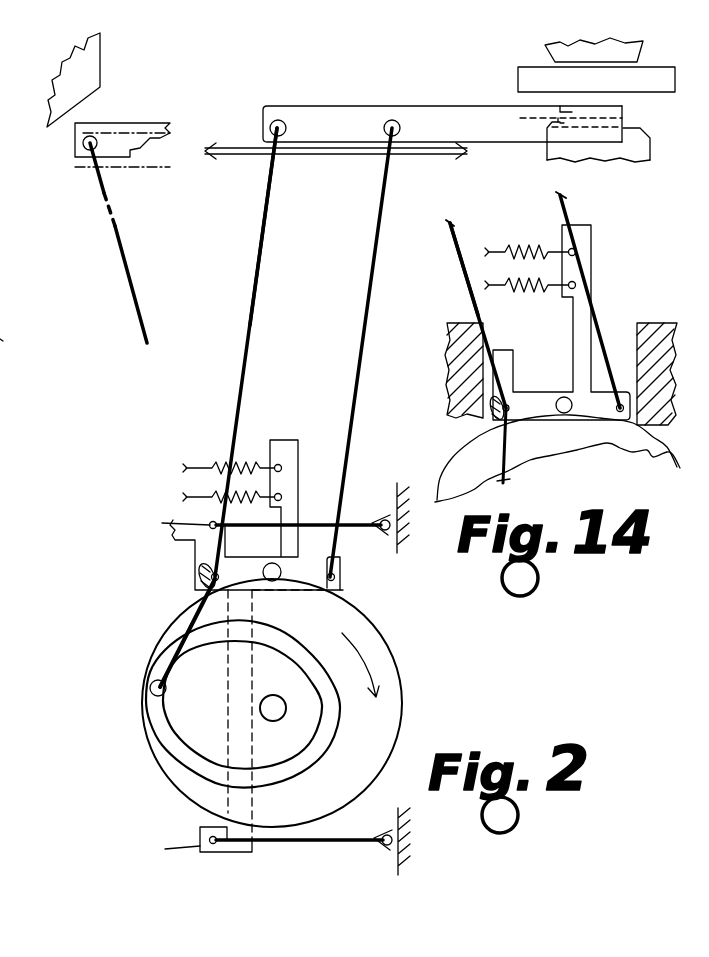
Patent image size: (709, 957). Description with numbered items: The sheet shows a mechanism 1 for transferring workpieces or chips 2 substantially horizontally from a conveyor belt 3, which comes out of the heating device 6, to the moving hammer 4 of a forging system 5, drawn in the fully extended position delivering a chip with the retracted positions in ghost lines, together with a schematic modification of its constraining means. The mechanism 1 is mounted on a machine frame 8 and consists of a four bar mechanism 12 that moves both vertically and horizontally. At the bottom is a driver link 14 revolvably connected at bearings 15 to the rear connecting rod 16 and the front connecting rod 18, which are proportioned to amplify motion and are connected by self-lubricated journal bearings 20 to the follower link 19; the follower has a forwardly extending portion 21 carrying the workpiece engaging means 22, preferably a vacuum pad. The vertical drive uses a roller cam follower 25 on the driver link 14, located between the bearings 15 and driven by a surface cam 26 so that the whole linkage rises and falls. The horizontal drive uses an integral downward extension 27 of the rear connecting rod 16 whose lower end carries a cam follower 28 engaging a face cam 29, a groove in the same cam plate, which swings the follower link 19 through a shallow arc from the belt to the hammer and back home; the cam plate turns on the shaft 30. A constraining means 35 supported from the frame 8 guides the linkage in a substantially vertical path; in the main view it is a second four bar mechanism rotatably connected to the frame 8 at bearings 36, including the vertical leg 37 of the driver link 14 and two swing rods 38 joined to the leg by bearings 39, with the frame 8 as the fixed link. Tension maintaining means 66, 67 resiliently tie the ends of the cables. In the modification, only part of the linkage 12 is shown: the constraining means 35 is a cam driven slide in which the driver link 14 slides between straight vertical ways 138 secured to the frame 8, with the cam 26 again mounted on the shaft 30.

In FIG. 2, the mechanism 1 is at (110, 404).
In FIG. 2, the chip 2 is at (559, 118).
In FIG. 2, the conveyor belt 3 is at (240, 160).
In FIG. 2, the hammer 4 is at (644, 162).
In FIG. 2, the forging system 5 is at (489, 86).
In FIG. 2, the heating device 6 is at (95, 72).
In FIG. 2, the machine frame 8 is at (397, 552).
In FIG. 2, the four bar mechanism 12 is at (254, 226).
In FIG. 14, the four bar mechanism 12 is at (460, 303).
In FIG. 2, the driver link 14 is at (195, 552).
In FIG. 14, the driver link 14 is at (546, 411).
In FIG. 2, the bearings 15 is at (221, 576).
In FIG. 14, the bearings 15 is at (512, 400).
In FIG. 2, the rear connecting rod 16 is at (259, 268).
In FIG. 14, the rear connecting rod 16 is at (462, 268).
In FIG. 2, the front connecting rod 18 is at (386, 180).
In FIG. 14, the front connecting rod 18 is at (594, 309).
In FIG. 2, the follower link 19 is at (320, 106).
In FIG. 2, the bearings 20 is at (271, 124).
In FIG. 2, the forwardly extending portion 21 is at (636, 130).
In FIG. 2, the workpiece engaging means 22 is at (624, 113).
In FIG. 2, the cam follower 25 is at (268, 563).
In FIG. 14, the cam follower 25 is at (564, 413).
In FIG. 2, the surface cam 26 is at (401, 677).
In FIG. 14, the surface cam 26 is at (678, 467).
In FIG. 2, the downward extension 27 is at (205, 592).
In FIG. 2, the cam follower 28 is at (151, 693).
In FIG. 2, the face cam 29 is at (328, 738).
In FIG. 2, the shaft 30 is at (273, 697).
In FIG. 2, the constraining means 35 is at (219, 861).
In FIG. 14, the constraining means 35 is at (652, 308).
In FIG. 2, the bearings 36 is at (380, 518).
In FIG. 2, the vertical leg 37 is at (232, 800).
In FIG. 2, the swing rods 38 is at (312, 522).
In FIG. 2, the bearings 39 is at (176, 688).
In FIG. 2, the tension maintaining means 66 is at (237, 500).
In FIG. 2, the tension maintaining means 67 is at (248, 460).
In FIG. 14, the vertical ways 138 is at (453, 398).